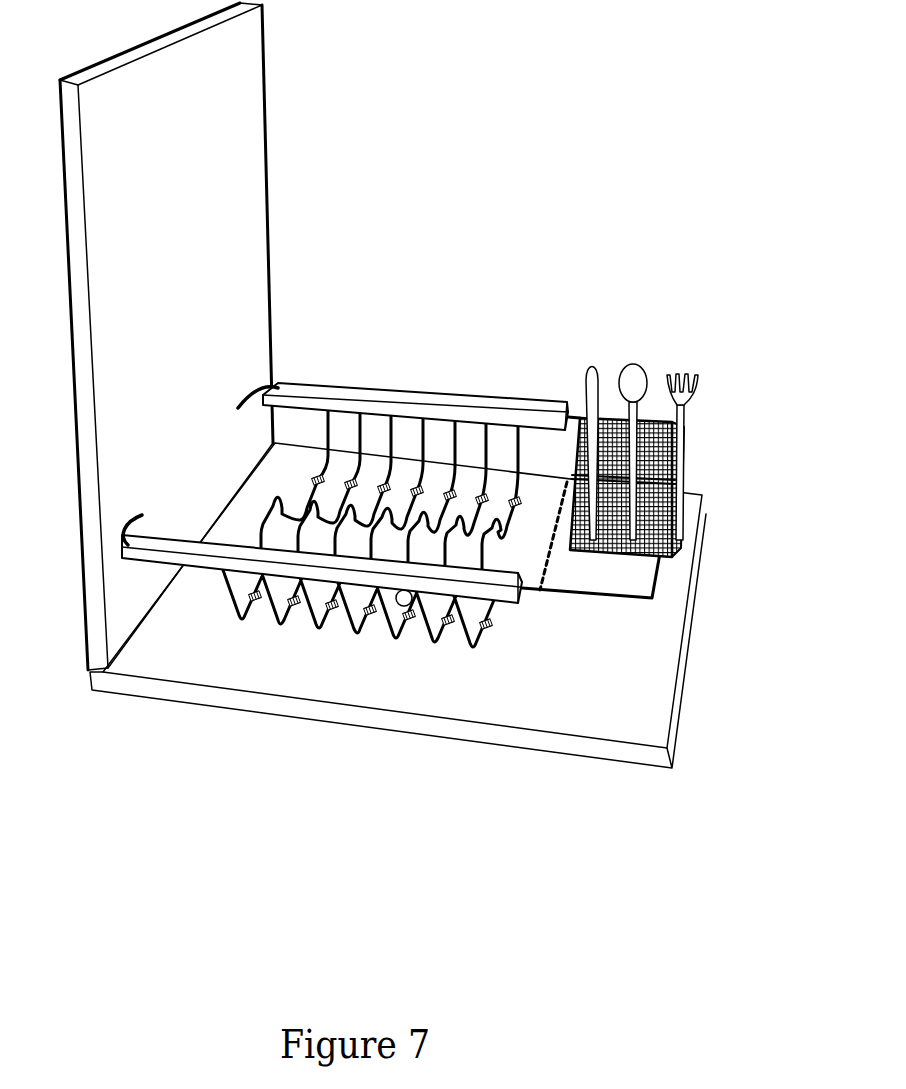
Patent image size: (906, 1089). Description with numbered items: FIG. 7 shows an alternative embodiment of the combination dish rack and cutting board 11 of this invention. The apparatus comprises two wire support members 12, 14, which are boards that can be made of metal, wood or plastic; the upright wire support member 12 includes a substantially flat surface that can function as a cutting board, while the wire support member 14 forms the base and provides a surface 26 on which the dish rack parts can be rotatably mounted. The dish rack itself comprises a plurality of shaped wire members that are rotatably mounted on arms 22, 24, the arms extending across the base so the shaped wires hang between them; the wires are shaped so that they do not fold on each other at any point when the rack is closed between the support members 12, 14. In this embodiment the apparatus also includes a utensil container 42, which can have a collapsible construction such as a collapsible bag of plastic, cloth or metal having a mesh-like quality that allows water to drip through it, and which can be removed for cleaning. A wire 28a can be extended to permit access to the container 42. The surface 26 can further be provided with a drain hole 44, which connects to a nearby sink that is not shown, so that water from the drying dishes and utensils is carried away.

The utensil drying rack 11 is at (332, 148).
The wire support member 12 is at (225, 98).
The wire support member 14 is at (705, 526).
The arm 22 is at (497, 392).
The arm 24 is at (308, 600).
The surface 26 is at (507, 694).
The wire 28a is at (618, 602).
The utensil container 42 is at (667, 548).
The drain hole 44 is at (400, 607).